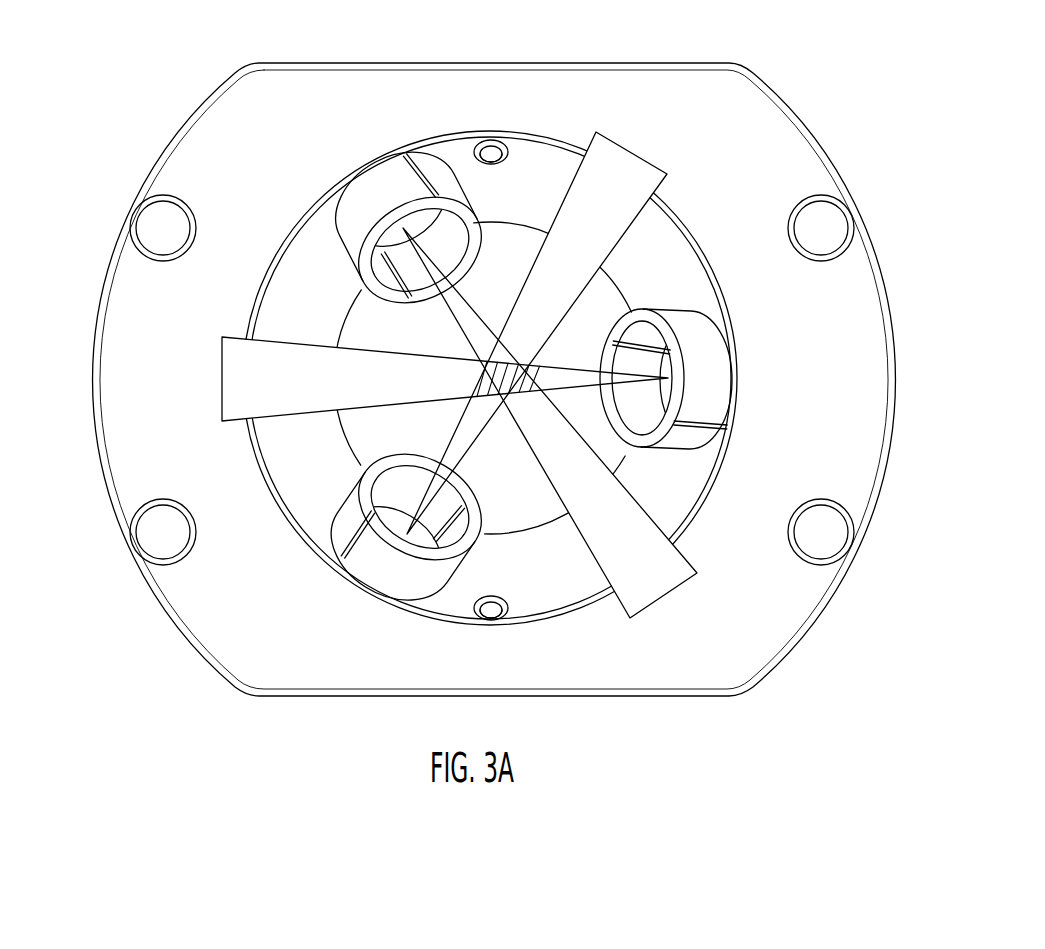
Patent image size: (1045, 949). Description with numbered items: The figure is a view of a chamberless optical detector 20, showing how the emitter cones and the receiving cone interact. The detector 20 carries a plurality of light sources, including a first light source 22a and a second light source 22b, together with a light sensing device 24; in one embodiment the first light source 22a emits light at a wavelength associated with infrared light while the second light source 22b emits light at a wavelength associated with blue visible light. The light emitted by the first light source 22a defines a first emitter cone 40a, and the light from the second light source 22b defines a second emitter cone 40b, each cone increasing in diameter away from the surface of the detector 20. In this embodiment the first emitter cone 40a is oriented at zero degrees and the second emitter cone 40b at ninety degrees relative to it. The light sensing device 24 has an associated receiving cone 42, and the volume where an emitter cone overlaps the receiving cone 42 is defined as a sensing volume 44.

The detector 20 is at (138, 339).
The first light source 22a is at (373, 570).
The second light source 22b is at (390, 178).
The light sensing device 24 is at (718, 373).
The first emitter cone 40a is at (623, 197).
The second emitter cone 40b is at (597, 527).
The receiving cone 42 is at (233, 393).
The sensing volume 44 is at (503, 377).